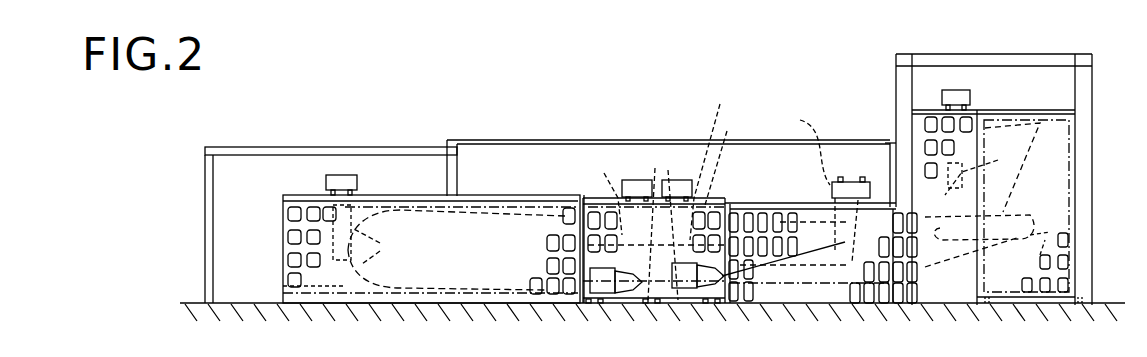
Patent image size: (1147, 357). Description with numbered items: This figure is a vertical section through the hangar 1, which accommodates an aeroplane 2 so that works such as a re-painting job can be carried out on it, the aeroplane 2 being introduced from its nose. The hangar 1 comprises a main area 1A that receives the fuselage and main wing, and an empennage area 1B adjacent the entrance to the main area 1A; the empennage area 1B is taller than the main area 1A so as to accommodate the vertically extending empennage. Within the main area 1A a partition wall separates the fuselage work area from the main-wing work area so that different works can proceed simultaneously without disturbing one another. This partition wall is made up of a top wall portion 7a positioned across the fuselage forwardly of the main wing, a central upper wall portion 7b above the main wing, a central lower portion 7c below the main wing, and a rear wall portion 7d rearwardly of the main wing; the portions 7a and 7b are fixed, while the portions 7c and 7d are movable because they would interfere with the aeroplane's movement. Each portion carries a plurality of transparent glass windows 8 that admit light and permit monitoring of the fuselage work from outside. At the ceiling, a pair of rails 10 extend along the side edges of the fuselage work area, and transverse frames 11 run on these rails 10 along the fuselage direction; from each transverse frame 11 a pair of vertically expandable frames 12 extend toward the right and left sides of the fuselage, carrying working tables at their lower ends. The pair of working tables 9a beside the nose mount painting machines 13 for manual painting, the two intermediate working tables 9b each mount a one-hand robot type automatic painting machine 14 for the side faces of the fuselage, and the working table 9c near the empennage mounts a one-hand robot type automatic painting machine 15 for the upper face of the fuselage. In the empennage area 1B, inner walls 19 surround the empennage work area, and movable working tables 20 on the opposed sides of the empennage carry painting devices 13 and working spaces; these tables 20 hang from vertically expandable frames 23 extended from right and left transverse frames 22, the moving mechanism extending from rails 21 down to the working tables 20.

The hangar 1 is at (593, 135).
The main area 1A is at (543, 140).
The empennage area 1B is at (896, 64).
The aeroplane 2 is at (440, 308).
The top wall portion 7a is at (283, 283).
The central upper wall portion 7b is at (582, 200).
The central lower portion 7c is at (622, 300).
The rear wall portion 7d is at (921, 302).
The transparent glass windows 8 is at (925, 147).
The working tables 9a is at (331, 273).
The working tables 9b is at (668, 300).
The working table 9c is at (806, 252).
The rails 10 is at (307, 195).
The transverse frames 11 is at (343, 175).
The vertically expandable frames 12 is at (367, 200).
The painting machines 13 is at (691, 218).
The automatic painting machine 14 is at (699, 203).
The automatic painting machine 15 is at (896, 158).
The inner walls 19 is at (896, 92).
The working tables 20 is at (1052, 226).
The rails 21 is at (1062, 110).
The transverse frames 22 is at (958, 90).
The vertically expandable frames 23 is at (988, 126).